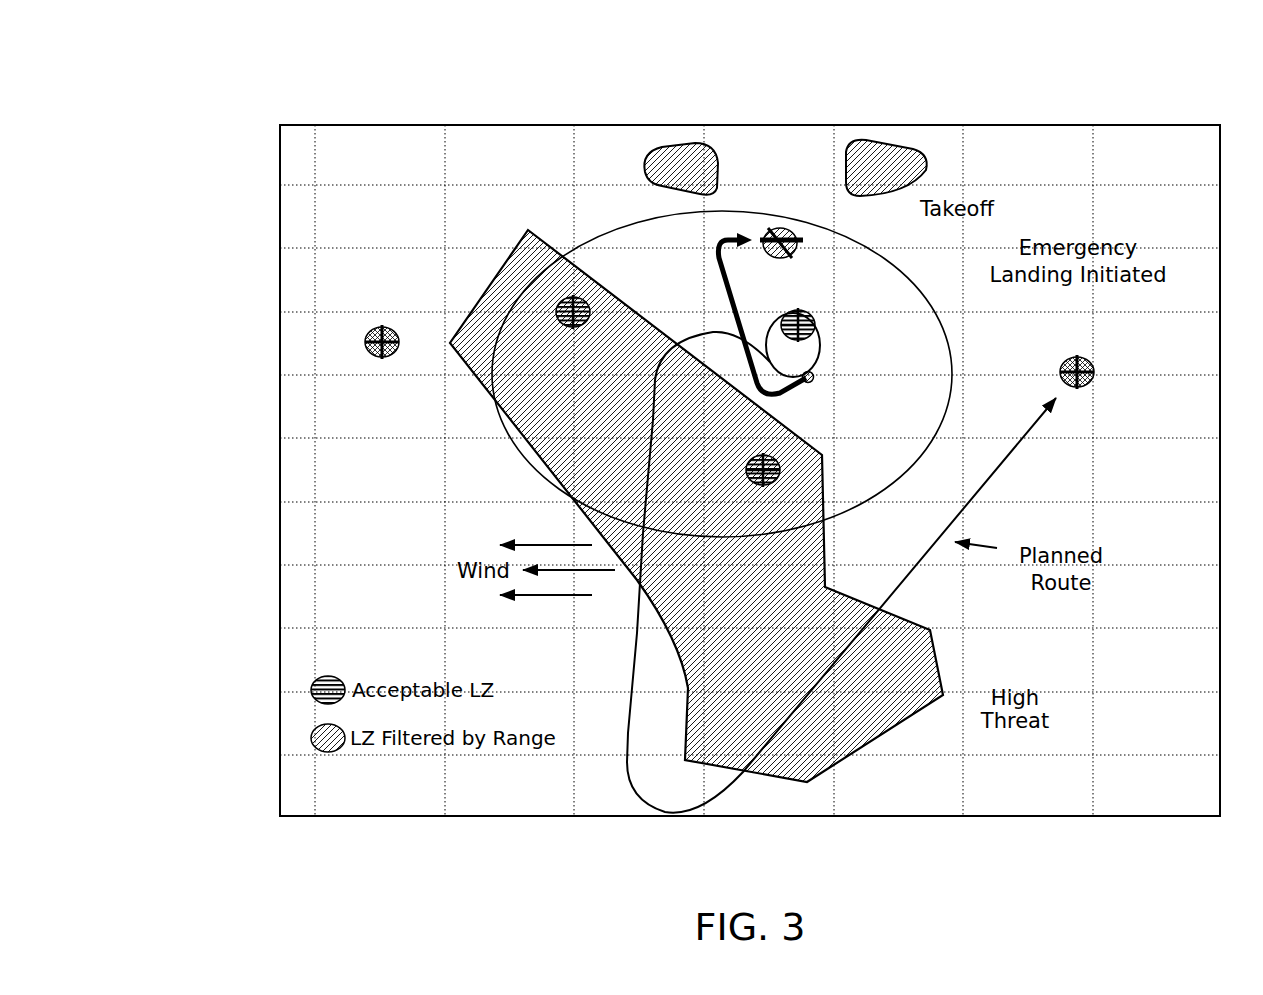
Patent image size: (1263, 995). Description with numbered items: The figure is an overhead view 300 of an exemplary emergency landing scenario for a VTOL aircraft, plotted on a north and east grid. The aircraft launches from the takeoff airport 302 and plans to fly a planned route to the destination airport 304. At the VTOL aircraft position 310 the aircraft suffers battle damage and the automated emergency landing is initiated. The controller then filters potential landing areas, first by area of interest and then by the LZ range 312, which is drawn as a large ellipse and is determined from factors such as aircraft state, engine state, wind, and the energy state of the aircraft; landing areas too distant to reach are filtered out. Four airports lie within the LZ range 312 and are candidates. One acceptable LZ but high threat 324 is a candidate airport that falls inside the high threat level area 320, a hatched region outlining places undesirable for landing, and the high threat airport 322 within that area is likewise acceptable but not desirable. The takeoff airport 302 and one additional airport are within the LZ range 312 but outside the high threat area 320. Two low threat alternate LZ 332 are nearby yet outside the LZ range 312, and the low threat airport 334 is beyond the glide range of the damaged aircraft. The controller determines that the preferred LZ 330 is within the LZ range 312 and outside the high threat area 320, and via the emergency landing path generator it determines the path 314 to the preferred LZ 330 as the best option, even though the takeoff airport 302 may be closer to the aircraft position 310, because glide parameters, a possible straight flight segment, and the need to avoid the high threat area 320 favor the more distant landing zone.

The overhead view 300 is at (105, 99).
The takeoff airport 302 is at (817, 307).
The destination airport 304 is at (1099, 371).
The VTOL aircraft position 310 is at (824, 372).
The LZ range 312 is at (497, 420).
The path 314 is at (708, 247).
The high threat level area 320 is at (940, 672).
The high threat airport 322 is at (548, 303).
The acceptable LZ but high threat 324 is at (784, 463).
The preferred LZ 330 is at (778, 222).
The low threat alternate LZ 332 is at (840, 155).
The low threat airport 334 is at (363, 329).